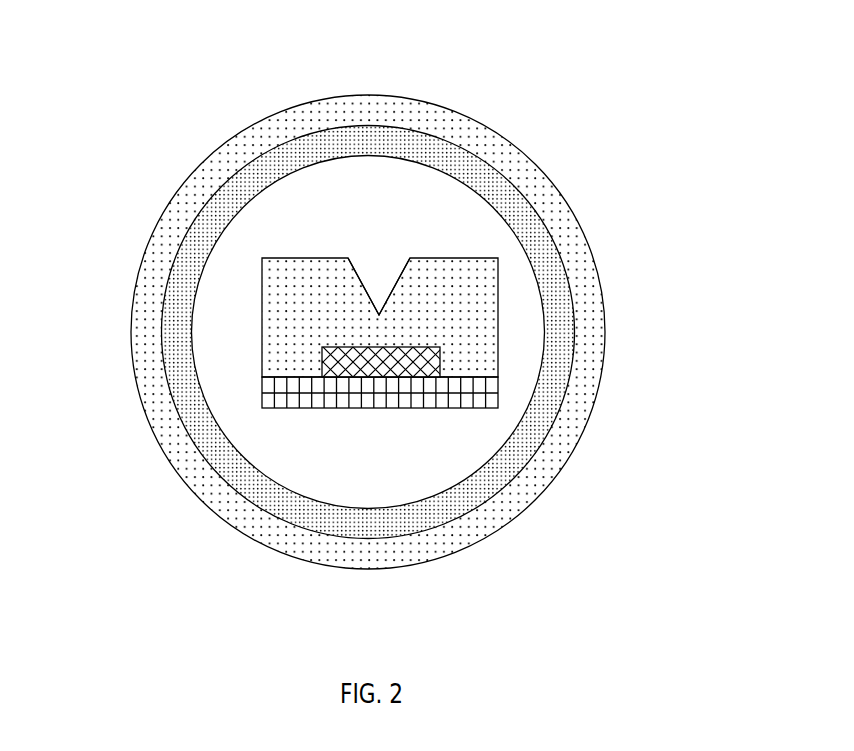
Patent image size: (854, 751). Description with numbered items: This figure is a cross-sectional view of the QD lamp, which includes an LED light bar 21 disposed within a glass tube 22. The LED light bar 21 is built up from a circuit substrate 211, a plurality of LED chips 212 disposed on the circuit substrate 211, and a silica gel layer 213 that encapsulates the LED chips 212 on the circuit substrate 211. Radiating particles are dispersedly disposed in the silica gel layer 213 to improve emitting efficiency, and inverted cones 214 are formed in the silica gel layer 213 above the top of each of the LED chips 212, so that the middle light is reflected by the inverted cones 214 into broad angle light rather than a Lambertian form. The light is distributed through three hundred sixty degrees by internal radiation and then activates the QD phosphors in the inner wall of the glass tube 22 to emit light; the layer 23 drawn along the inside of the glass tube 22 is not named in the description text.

The LED light bar 21 is at (370, 259).
The circuit substrate 211 is at (457, 393).
The LED chips 212 is at (380, 347).
The silica gel layer 213 is at (428, 273).
The inverted cones 214 is at (378, 272).
The glass tube 22 is at (497, 153).
The phosphor layer 23 is at (412, 130).